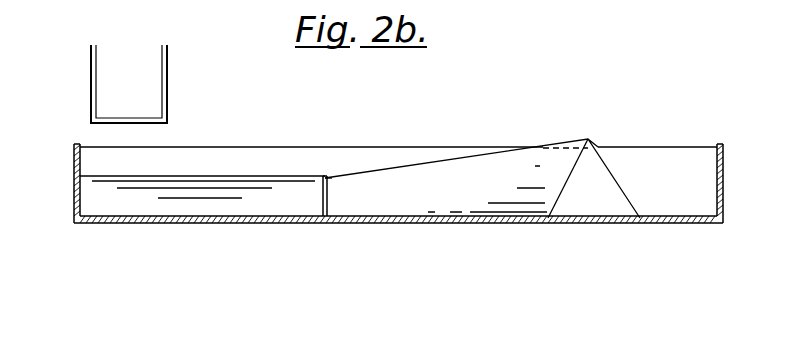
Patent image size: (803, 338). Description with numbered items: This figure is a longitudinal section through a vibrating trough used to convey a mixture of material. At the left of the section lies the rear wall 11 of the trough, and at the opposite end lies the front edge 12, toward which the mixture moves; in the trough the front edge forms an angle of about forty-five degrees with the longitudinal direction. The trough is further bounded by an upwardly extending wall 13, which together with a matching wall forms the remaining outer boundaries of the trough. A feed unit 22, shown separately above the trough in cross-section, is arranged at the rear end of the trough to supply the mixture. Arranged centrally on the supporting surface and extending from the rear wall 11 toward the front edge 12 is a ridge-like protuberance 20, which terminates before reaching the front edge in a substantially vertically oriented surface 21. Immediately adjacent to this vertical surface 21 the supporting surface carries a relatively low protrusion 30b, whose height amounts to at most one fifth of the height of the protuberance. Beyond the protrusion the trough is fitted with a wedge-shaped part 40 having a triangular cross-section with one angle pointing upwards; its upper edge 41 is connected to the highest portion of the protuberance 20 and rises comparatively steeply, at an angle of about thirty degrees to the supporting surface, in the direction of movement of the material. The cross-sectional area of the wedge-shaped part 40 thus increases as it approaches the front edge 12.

The rear wall 11 is at (74, 165).
The front edge 12 is at (660, 225).
The wall 13 is at (677, 152).
The protuberance 20 is at (258, 192).
The vertical surface 21 is at (327, 189).
The feed unit 22 is at (167, 88).
The protrusion 30b is at (323, 208).
The wedge-shaped part 40 is at (500, 192).
The upper edge 41 is at (420, 166).